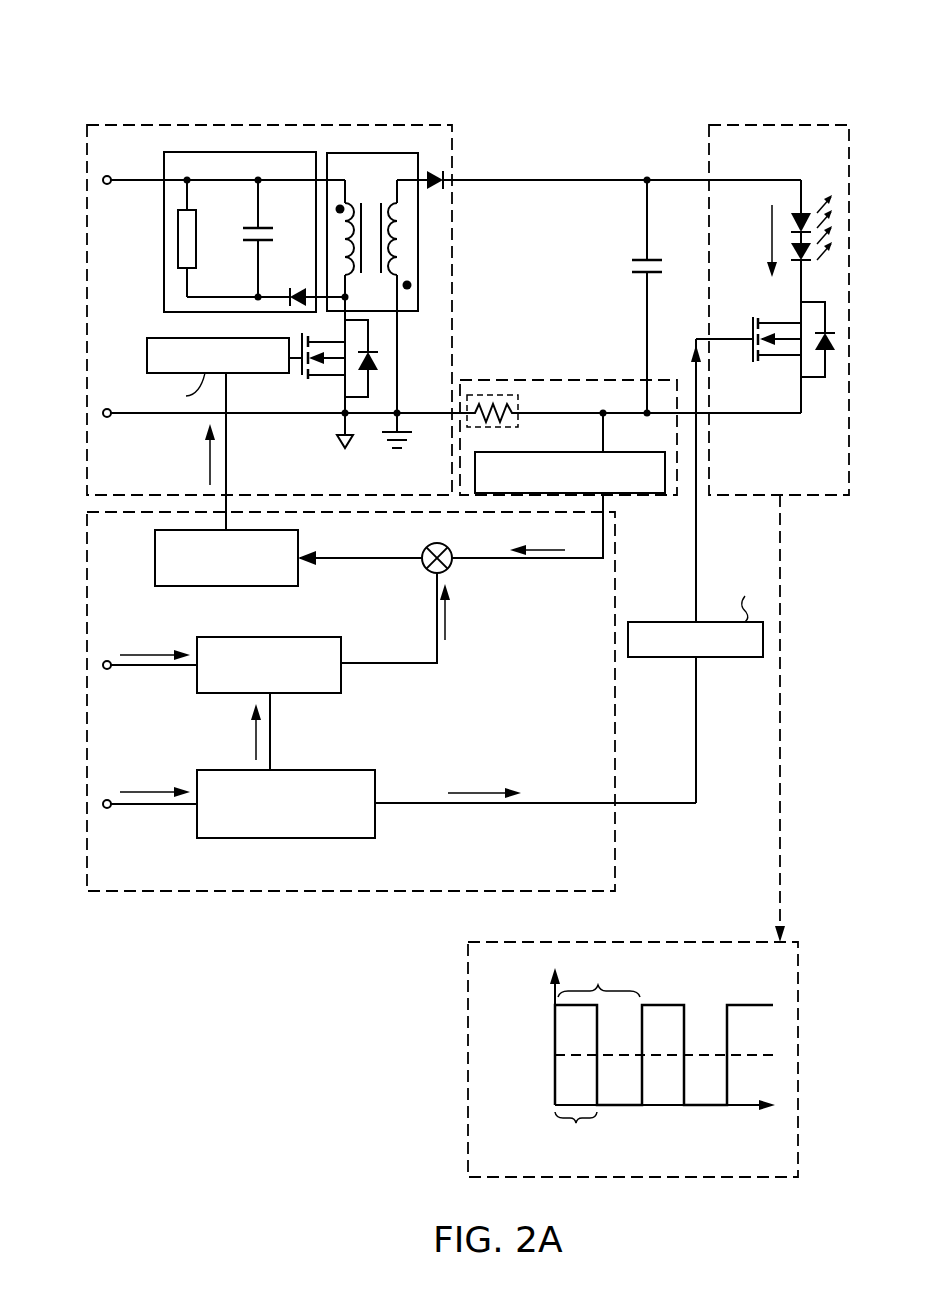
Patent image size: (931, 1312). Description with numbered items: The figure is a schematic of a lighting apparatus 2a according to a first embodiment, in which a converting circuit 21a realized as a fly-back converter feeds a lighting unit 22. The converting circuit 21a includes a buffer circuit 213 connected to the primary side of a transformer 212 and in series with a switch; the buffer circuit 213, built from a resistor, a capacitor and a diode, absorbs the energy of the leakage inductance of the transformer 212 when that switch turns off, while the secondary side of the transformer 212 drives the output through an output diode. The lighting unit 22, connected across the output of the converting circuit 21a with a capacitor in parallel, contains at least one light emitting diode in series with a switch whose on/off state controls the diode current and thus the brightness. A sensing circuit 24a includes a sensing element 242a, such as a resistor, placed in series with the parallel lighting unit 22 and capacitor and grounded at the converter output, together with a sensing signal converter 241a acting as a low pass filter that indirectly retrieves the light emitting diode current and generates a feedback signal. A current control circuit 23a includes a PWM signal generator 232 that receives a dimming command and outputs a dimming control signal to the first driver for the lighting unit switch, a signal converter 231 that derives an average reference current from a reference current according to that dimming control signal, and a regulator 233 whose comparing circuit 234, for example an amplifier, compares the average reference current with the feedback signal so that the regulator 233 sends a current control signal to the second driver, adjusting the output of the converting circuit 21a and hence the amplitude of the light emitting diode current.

The lighting apparatus 2a is at (92, 60).
The converting circuit 21a is at (107, 126).
The buffer circuit 213 is at (188, 152).
The transformer 212 is at (343, 153).
The lighting unit 22 is at (760, 126).
The sensing circuit 24a is at (546, 380).
The sensing element 242a is at (500, 428).
The sensing signal converter 241a is at (609, 452).
The current control circuit 23a is at (120, 891).
The regulator 233 is at (152, 572).
The comparing circuit 234 is at (426, 547).
The signal converter 231 is at (305, 637).
The PWM signal generator 232 is at (343, 770).